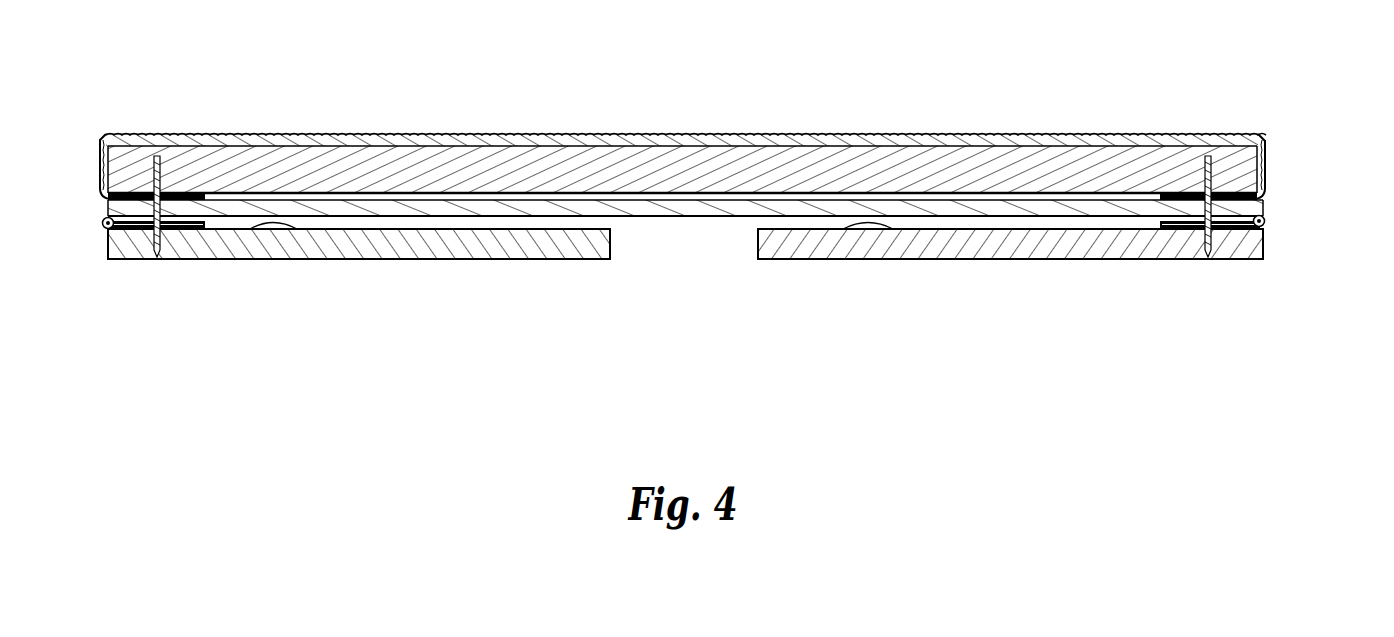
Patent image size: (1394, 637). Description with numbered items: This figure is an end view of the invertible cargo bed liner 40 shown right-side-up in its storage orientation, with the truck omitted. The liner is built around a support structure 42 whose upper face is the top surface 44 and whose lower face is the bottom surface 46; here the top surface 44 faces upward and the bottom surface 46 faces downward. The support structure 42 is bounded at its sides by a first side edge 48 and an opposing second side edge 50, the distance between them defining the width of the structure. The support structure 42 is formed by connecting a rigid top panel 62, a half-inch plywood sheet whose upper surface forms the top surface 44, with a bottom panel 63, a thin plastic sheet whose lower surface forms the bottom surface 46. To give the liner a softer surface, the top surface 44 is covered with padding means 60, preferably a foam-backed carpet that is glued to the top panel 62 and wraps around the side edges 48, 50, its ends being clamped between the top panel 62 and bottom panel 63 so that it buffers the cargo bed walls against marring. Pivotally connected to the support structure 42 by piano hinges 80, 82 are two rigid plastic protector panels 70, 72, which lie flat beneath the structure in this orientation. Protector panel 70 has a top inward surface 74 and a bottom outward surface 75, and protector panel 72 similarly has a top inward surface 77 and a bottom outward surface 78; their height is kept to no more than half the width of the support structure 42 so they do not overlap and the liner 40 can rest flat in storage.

The liner 40 is at (1168, 77).
The support structure 42 is at (1271, 129).
The top surface 44 is at (538, 138).
The bottom surface 46 is at (673, 222).
The first side edge 48 is at (88, 180).
The second side edge 50 is at (1280, 172).
The padding means 60 is at (312, 137).
The rigid top panel 62 is at (445, 150).
The bottom panel 63 is at (655, 208).
The protector panel 70 is at (375, 260).
The protector panel 72 is at (1110, 259).
The top inward surface 74 is at (250, 229).
The bottom outward surface 75 is at (493, 260).
The top inward surface 77 is at (843, 229).
The bottom outward surface 78 is at (988, 259).
The piano hinge 80 is at (95, 226).
The piano hinge 82 is at (1268, 222).